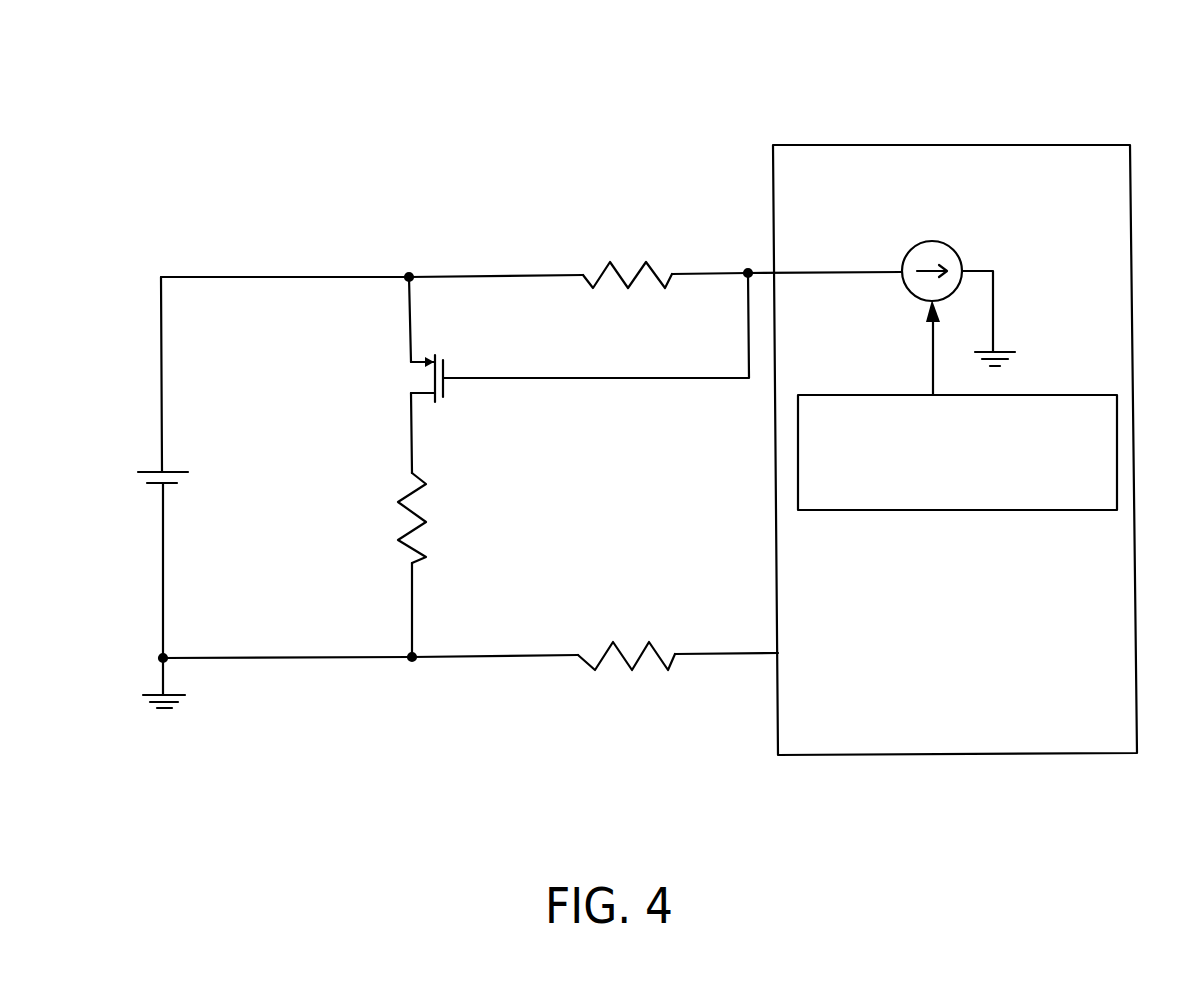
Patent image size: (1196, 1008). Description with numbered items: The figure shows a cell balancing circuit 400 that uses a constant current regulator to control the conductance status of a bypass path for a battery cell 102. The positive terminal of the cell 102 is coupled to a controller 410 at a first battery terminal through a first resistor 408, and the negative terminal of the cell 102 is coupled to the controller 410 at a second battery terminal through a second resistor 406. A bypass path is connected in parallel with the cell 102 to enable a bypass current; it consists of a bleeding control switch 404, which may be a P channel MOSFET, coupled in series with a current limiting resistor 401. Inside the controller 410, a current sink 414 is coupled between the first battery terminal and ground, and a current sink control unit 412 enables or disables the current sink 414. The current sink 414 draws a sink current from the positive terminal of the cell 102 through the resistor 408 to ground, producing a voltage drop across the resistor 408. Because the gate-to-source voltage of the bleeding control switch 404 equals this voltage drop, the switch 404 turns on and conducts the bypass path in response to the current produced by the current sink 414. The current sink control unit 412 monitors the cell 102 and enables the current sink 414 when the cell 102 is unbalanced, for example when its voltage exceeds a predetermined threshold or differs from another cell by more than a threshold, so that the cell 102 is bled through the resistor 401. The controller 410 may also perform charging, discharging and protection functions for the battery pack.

The cell balancing circuit 400 is at (1079, 86).
The cell 102 is at (172, 485).
The current limiting resistor 401 is at (415, 565).
The bleeding control switch 404 is at (447, 390).
The second resistor 406 is at (672, 657).
The first resistor 408 is at (668, 278).
The controller 410 is at (1130, 168).
The current sink control unit 412 is at (993, 510).
The current sink 414 is at (909, 291).